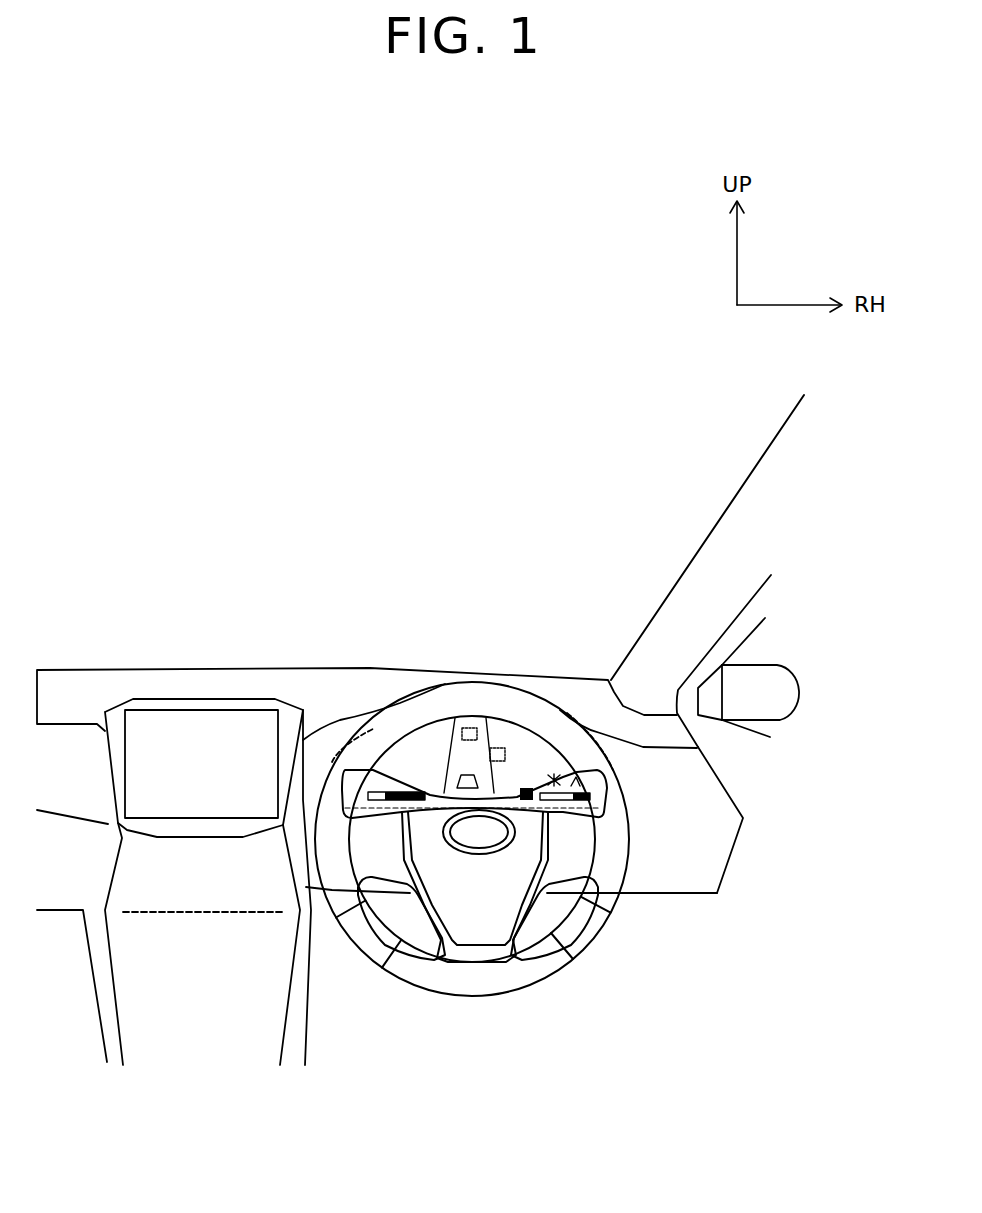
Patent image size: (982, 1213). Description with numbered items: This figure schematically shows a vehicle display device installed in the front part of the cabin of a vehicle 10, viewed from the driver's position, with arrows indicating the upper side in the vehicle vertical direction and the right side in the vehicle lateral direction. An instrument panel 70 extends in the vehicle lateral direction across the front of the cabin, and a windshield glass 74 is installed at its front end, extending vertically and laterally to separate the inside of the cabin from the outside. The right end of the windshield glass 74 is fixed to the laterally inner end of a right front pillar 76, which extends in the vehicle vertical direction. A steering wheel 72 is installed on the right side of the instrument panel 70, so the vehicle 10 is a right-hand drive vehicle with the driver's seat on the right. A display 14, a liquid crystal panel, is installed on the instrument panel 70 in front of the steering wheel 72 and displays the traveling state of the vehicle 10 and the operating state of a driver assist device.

The vehicle 10 is at (556, 309).
The display 14 is at (438, 748).
The instrument panel 70 is at (668, 892).
The steering wheel 72 is at (627, 807).
The windshield glass 74 is at (703, 520).
The front pillar 76 is at (767, 450).